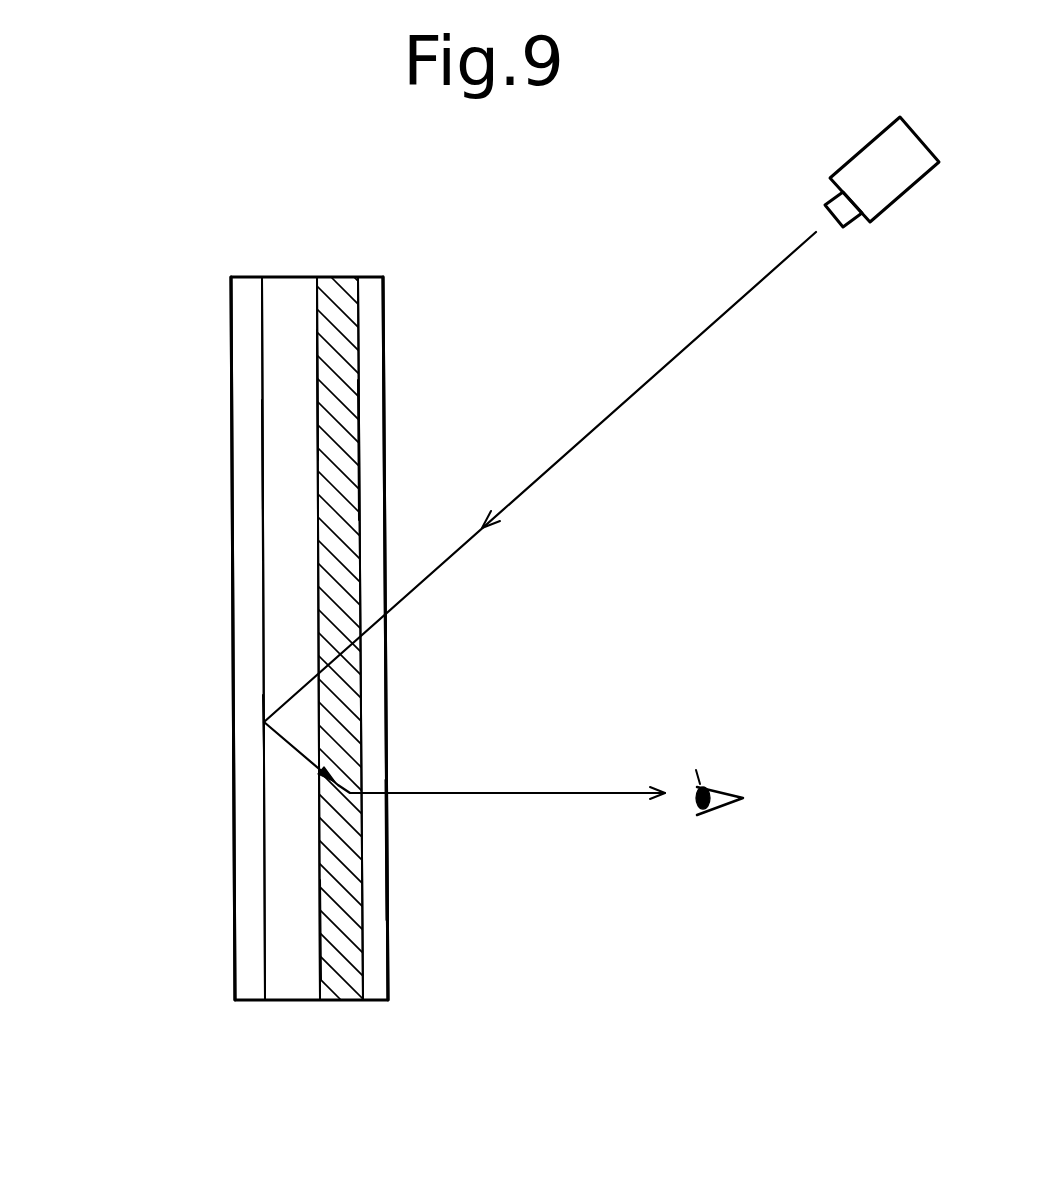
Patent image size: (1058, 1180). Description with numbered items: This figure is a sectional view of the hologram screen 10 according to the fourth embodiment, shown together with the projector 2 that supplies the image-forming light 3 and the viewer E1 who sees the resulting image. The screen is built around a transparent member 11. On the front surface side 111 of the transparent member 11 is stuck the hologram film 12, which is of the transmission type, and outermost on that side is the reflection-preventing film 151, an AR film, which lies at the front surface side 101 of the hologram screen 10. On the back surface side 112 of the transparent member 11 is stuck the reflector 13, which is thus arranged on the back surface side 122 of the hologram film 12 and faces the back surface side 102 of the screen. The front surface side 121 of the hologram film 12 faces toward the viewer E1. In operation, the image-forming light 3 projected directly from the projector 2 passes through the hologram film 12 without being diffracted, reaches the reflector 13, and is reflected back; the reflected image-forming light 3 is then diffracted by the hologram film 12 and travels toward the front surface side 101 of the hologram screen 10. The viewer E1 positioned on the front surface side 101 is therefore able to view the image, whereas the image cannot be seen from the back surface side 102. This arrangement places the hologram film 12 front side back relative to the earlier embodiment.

The hologram screen 10 is at (178, 911).
The transparent member 11 is at (275, 305).
The hologram film 12 is at (342, 300).
The reflector 13 is at (240, 810).
The front surface side of the hologram screen 101 is at (388, 847).
The back surface side of the hologram screen 102 is at (233, 720).
The front surface side of the transparent member 111 is at (320, 922).
The back surface side of the transparent member 112 is at (262, 480).
The front surface side of the hologram film 121 is at (358, 455).
The back surface side of the hologram film 122 is at (316, 390).
The reflection-preventing film 151 is at (378, 372).
The projector 2 is at (888, 190).
The image-forming light 3 is at (705, 328).
The viewer E1 is at (720, 790).